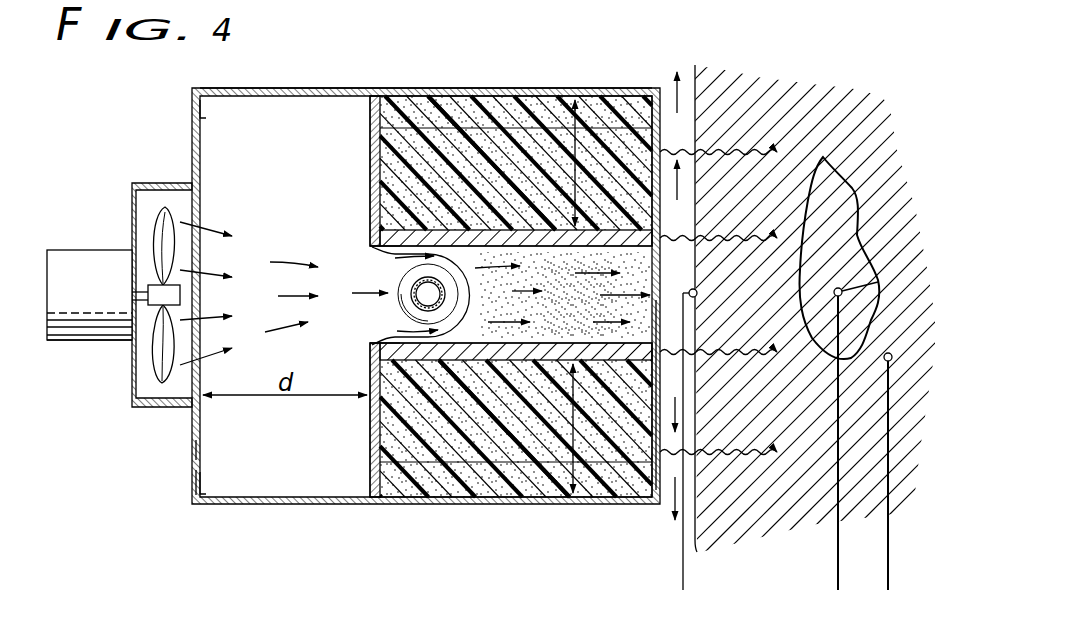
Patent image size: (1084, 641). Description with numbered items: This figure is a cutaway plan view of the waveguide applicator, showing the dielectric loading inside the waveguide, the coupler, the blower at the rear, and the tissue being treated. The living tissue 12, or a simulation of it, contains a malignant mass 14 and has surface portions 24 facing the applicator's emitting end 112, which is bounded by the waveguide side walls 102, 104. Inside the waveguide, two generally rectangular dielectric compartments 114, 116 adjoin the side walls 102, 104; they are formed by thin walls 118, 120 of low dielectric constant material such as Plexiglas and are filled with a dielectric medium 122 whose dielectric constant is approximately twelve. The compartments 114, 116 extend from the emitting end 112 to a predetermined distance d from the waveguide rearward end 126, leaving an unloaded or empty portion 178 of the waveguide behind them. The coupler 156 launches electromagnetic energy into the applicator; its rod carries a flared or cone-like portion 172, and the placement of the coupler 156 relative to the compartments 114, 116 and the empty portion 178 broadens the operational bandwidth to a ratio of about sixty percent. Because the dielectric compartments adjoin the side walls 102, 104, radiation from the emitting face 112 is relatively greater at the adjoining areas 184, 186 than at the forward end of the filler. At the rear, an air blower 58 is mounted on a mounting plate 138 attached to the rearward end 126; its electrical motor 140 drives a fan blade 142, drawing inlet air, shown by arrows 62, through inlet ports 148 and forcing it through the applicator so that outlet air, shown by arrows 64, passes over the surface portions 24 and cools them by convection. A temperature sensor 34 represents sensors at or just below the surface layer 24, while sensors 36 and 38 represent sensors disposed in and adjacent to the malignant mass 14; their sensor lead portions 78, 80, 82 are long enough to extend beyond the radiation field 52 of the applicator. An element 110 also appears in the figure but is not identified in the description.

The living tissue 12 is at (796, 136).
The malignant mass 14 is at (862, 247).
The surface portions of the tissue 24 is at (697, 229).
The temperature sensor 34 is at (698, 293).
The temperature sensor 36 is at (879, 282).
The temperature sensor 38 is at (888, 353).
The radiation field 52 is at (752, 153).
The air blower 58 is at (83, 342).
The inlet air arrows 62 is at (145, 222).
The outlet air arrows 64 is at (680, 165).
The sensor lead portion 78 is at (694, 481).
The sensor lead portion 80 is at (837, 404).
The sensor lead portion 82 is at (887, 411).
The side wall 102 is at (357, 506).
The side wall 104 is at (453, 88).
The housing flange 110 is at (203, 113).
The emitting end 112 is at (665, 387).
The dielectric compartment 114 is at (386, 342).
The dielectric compartment 116 is at (386, 248).
The thin wall 118 is at (372, 432).
The thin wall 120 is at (373, 139).
The dielectric medium 122 is at (536, 105).
The waveguide rearward end 126 is at (188, 470).
The mounting plate 138 is at (193, 450).
The electrical motor 140 is at (84, 232).
The fan blade 142 is at (166, 212).
The inlet ports 148 is at (132, 215).
The coupler 156 is at (457, 308).
The cone-like portion 172 is at (450, 290).
The unloaded portion of the waveguide 178 is at (290, 181).
The adjoining area 184 is at (665, 442).
The adjoining area 186 is at (664, 135).